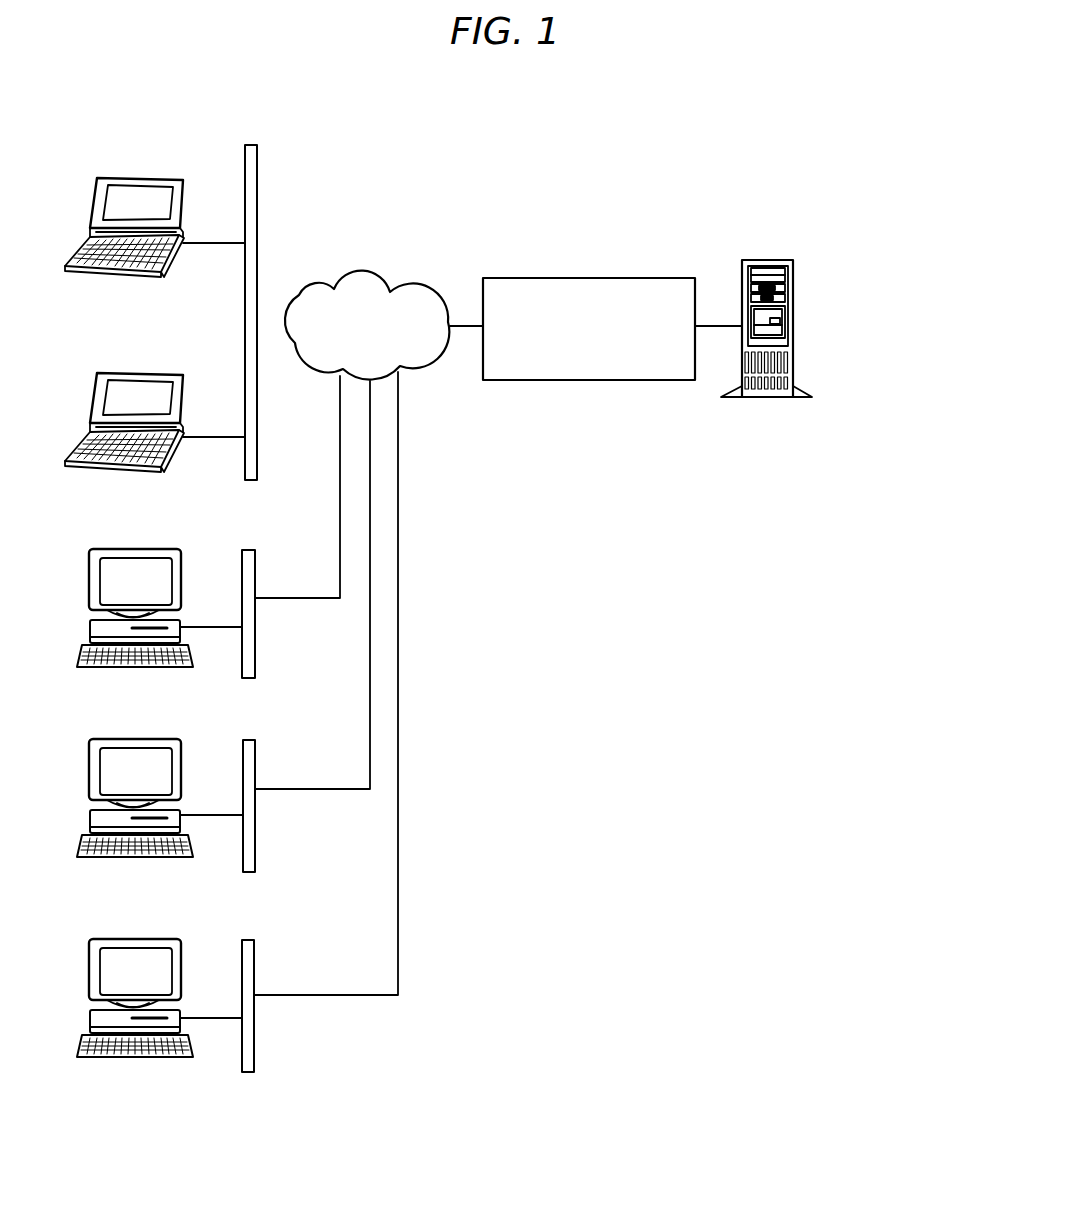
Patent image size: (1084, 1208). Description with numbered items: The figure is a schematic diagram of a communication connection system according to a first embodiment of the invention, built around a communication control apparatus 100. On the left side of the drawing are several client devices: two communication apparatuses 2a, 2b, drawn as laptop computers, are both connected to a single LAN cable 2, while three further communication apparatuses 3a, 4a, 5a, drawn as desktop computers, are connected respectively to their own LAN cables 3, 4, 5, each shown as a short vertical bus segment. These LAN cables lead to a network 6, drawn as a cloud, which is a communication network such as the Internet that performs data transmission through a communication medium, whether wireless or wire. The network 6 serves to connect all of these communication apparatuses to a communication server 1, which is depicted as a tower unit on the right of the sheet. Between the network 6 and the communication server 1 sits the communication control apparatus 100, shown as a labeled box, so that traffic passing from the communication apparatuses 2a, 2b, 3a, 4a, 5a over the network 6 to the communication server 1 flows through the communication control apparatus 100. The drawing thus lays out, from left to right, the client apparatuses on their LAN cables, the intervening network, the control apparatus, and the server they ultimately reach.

The communication server 1 is at (753, 260).
The LAN cable 2 is at (258, 172).
The communication apparatus 2a is at (135, 177).
The communication apparatus 2b is at (135, 372).
The LAN cable 3 is at (256, 636).
The communication apparatus 3a is at (134, 549).
The LAN cable 4 is at (256, 822).
The communication apparatus 4a is at (134, 739).
The LAN cable 5 is at (255, 1033).
The communication apparatus 5a is at (134, 939).
The network 6 is at (363, 273).
The communication control apparatus 100 is at (585, 278).